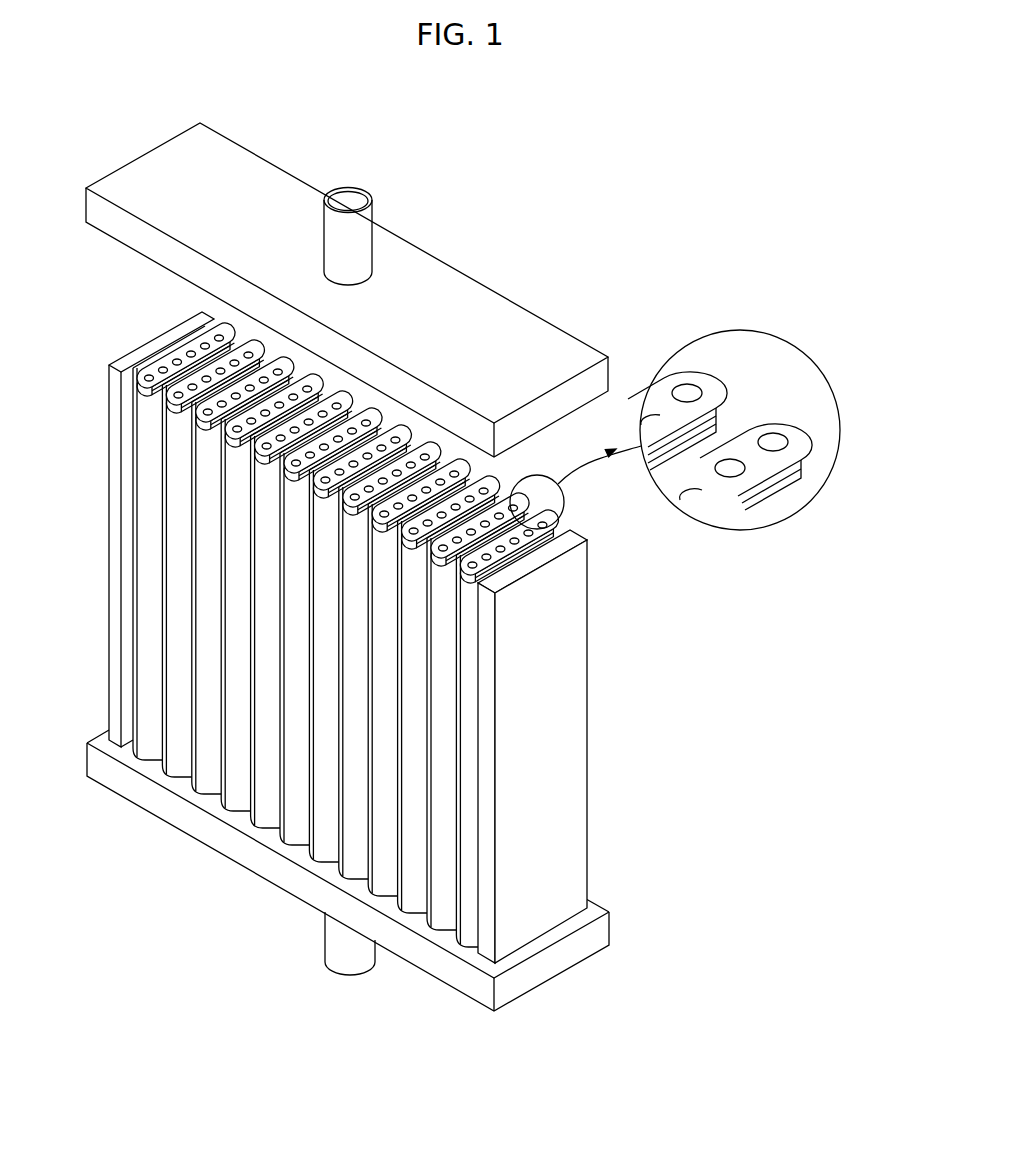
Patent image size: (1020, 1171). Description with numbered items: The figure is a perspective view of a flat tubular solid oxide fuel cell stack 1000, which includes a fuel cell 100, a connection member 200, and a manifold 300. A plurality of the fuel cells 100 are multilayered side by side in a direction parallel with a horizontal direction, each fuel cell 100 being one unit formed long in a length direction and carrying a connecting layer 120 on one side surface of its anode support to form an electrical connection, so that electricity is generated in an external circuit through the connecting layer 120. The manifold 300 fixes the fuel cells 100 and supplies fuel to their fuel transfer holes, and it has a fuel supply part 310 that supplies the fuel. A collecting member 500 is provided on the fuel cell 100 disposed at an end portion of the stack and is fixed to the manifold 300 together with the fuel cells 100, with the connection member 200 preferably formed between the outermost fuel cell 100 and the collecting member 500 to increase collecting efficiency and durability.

The flat tubular solid oxide fuel cell stack 1000 is at (383, 556).
The manifold 300 is at (459, 284).
The fuel supply part 310 is at (356, 196).
The fuel cell 100 is at (712, 364).
The connecting layer 120 is at (731, 418).
The connection member 200 is at (760, 418).
The collecting member 500 is at (578, 660).